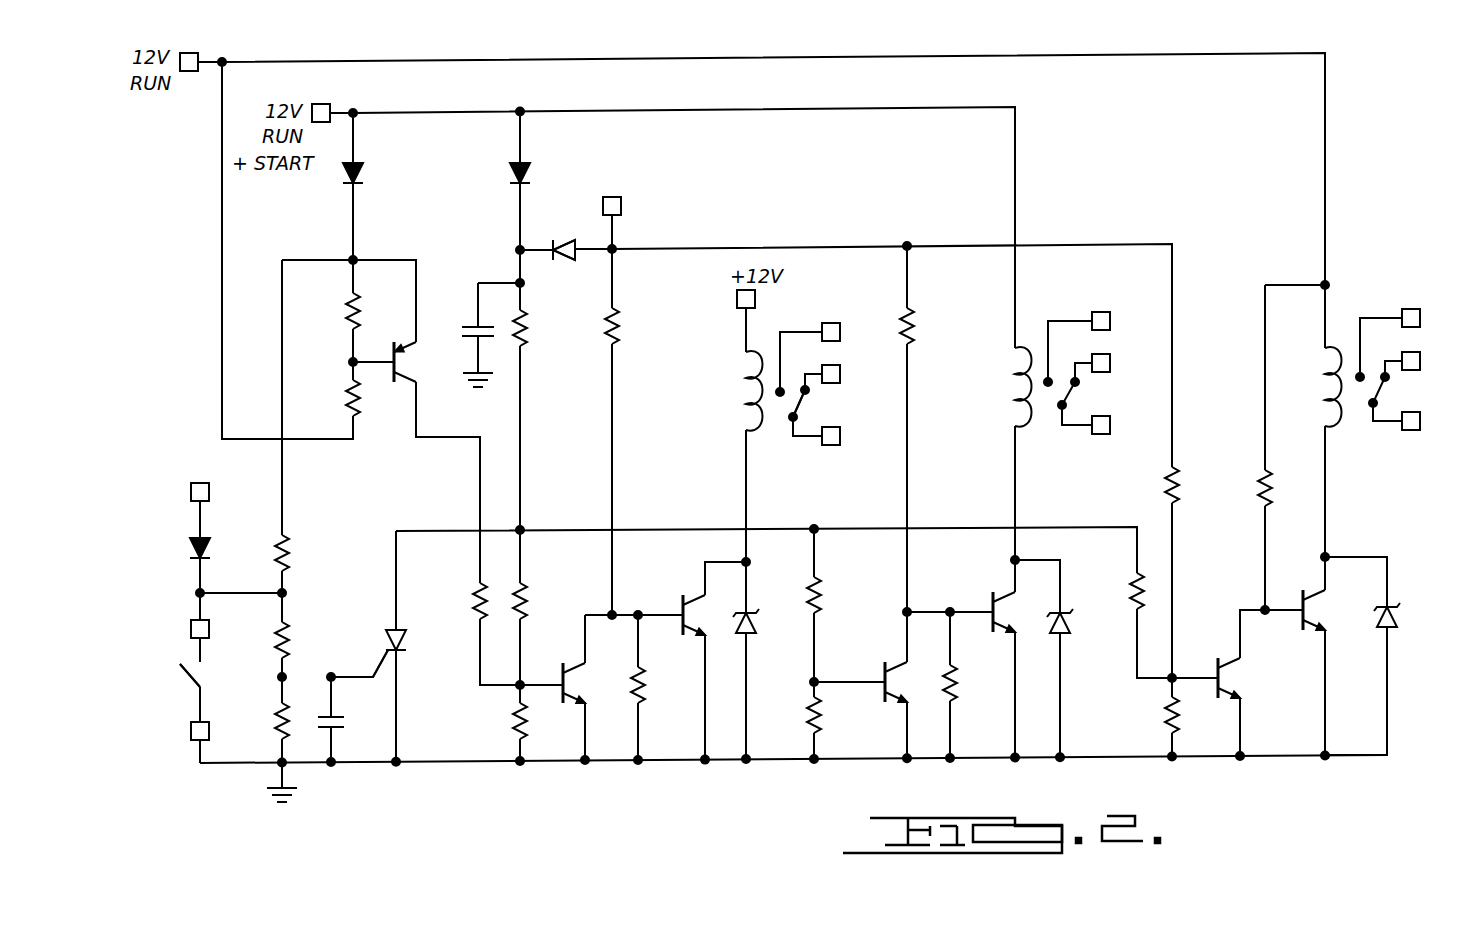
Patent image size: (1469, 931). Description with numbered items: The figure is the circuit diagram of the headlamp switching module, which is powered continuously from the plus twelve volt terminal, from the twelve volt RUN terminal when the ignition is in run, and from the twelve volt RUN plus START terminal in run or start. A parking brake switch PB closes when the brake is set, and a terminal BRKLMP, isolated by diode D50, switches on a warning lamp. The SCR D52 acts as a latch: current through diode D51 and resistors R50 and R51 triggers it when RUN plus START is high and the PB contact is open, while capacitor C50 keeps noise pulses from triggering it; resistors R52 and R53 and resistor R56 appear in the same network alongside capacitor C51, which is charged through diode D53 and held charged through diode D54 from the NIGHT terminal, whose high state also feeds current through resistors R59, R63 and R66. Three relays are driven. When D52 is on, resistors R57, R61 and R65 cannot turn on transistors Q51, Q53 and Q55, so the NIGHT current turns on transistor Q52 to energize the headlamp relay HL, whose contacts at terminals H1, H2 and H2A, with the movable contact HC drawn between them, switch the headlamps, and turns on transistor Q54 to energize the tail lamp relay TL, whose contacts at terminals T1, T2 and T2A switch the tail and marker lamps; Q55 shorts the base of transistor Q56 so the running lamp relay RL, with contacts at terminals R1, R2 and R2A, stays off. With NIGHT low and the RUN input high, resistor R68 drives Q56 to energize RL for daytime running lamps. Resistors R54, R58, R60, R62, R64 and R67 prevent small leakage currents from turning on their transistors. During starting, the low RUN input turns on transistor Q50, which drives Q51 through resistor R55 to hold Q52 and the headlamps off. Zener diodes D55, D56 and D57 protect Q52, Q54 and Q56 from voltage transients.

The resistor R50 is at (334, 308).
The resistor R51 is at (334, 398).
The resistor R52 is at (304, 553).
The resistor R53 is at (304, 640).
The resistor R54 is at (262, 721).
The resistor R55 is at (458, 601).
The resistor R56 is at (543, 328).
The resistor R57 is at (546, 600).
The resistor R58 is at (496, 721).
The resistor R59 is at (637, 326).
The resistor R60 is at (659, 691).
The resistor R61 is at (795, 593).
The resistor R62 is at (793, 723).
The resistor R63 is at (931, 323).
The resistor R64 is at (971, 688).
The resistor R65 is at (1117, 588).
The resistor R66 is at (1148, 485).
The resistor R67 is at (1147, 718).
The resistor R68 is at (1243, 478).
The diode D50 is at (175, 550).
The diode D51 is at (376, 174).
The SCR D52 is at (409, 654).
The diode D53 is at (498, 174).
The diode D54 is at (567, 237).
The zener diode D55 is at (767, 636).
The zener diode D56 is at (1079, 636).
The zener diode D57 is at (1406, 627).
The transistor Q50 is at (393, 347).
The transistor Q51 is at (562, 670).
The transistor Q52 is at (674, 601).
The transistor Q53 is at (880, 669).
The transistor Q54 is at (994, 599).
The transistor Q55 is at (1216, 667).
The transistor Q56 is at (1303, 598).
The capacitor C50 is at (352, 725).
The capacitor C51 is at (468, 320).
The headlamp relay HL is at (764, 405).
The headlamp relay common contact HC is at (815, 403).
The headlamp relay contact terminal H1 is at (849, 438).
The headlamp relay contact terminal H2 is at (849, 333).
The headlamp relay contact terminal H2A is at (855, 376).
The tail lamp relay TL is at (1032, 401).
The tail lamp relay contact terminal T1 is at (1119, 426).
The tail lamp relay contact terminal T2 is at (1119, 323).
The tail lamp relay contact terminal T2A is at (1125, 365).
The running lamp relay RL is at (1343, 401).
The running lamp relay contact terminal R1 is at (1428, 423).
The running lamp relay contact terminal R2 is at (1428, 320).
The running lamp relay contact terminal R2A is at (1435, 363).
The parking brake switch PB is at (179, 680).
The brake lamp terminal BRKLMP is at (174, 479).
The night terminal NIGHT is at (628, 193).